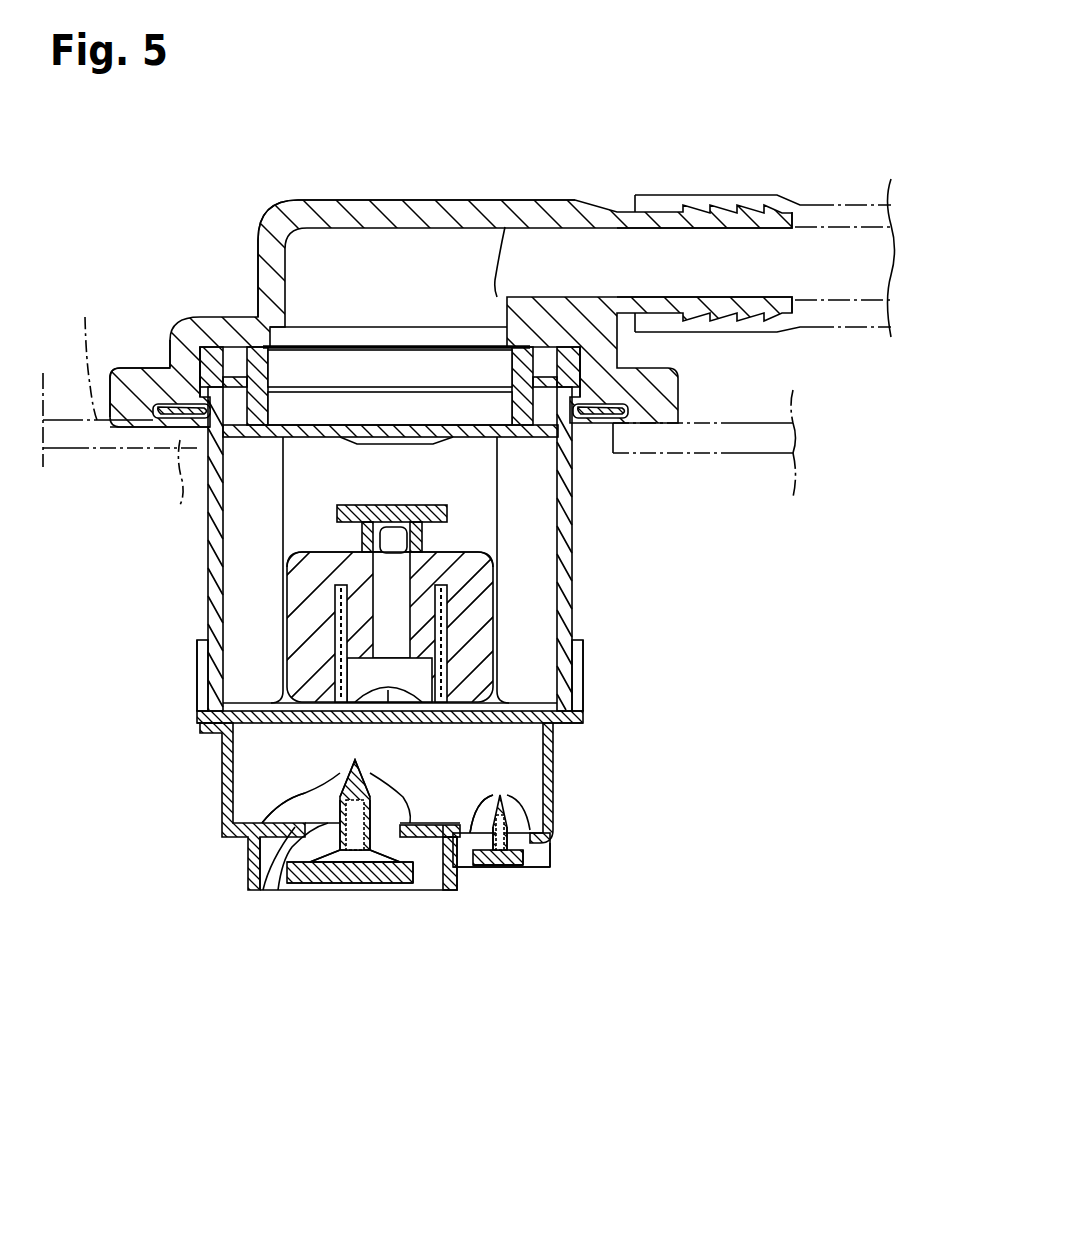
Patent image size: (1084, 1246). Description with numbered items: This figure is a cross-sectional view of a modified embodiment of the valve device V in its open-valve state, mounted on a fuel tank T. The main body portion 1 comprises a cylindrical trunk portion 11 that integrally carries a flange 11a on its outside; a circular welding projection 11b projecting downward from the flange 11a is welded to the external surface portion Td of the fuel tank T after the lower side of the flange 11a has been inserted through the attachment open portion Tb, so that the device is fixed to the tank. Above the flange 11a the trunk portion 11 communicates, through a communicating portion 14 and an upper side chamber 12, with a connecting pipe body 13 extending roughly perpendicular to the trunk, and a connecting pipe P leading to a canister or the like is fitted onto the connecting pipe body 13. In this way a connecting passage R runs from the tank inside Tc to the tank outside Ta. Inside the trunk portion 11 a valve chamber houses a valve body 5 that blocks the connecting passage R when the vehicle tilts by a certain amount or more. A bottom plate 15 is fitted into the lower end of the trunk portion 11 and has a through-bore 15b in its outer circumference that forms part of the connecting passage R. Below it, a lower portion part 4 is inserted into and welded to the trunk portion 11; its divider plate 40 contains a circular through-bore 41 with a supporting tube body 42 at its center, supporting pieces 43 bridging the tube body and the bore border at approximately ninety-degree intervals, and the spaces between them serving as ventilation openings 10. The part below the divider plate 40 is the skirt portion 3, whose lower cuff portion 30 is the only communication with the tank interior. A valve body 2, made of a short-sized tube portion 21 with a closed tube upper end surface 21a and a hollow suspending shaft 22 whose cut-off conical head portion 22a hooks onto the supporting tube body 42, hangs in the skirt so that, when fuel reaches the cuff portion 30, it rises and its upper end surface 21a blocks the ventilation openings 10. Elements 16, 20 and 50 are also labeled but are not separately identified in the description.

The valve device V is at (368, 165).
The upper side chamber 12 is at (330, 245).
The connecting pipe body 13 is at (696, 202).
The connecting pipe P is at (830, 202).
The connecting passage R is at (552, 252).
The fuel tank T is at (57, 420).
The outside of the fuel tank Ta is at (93, 228).
The attachment open portion Tb is at (166, 490).
The inside of the fuel tank Tc is at (103, 596).
The external surface portion Td is at (80, 353).
The trunk portion 11 is at (570, 618).
The flange 11a is at (138, 368).
The welding projection 11b is at (132, 440).
The communicating portion 14 is at (385, 440).
The main body portion 1 is at (566, 572).
The valve body 5 is at (493, 563).
The float 50 is at (390, 559).
The bottom plate 15 is at (265, 725).
The through-bore 15b is at (223, 743).
The lower housing 16 is at (540, 748).
The skirt portion 3 is at (255, 889).
The through-bore 41 is at (375, 872).
The divider plate 40 is at (260, 848).
The lower portion part 4 is at (227, 828).
The ventilation openings 10 is at (250, 800).
The supporting pieces 43 is at (318, 800).
The supporting tube body 42 is at (385, 790).
The head portion 22a is at (360, 765).
The suspending shaft 22 is at (262, 890).
The valve body 2 is at (280, 892).
The cuff portion 30 is at (300, 893).
The pin shaft 20 is at (335, 893).
The short-sized tube portion 21 is at (370, 893).
The tube upper end surface 21a is at (430, 893).